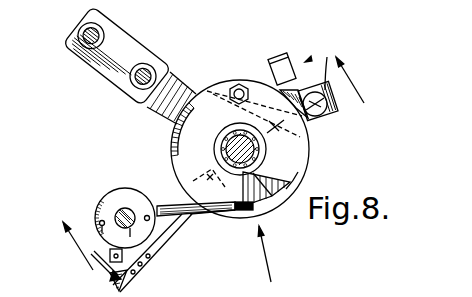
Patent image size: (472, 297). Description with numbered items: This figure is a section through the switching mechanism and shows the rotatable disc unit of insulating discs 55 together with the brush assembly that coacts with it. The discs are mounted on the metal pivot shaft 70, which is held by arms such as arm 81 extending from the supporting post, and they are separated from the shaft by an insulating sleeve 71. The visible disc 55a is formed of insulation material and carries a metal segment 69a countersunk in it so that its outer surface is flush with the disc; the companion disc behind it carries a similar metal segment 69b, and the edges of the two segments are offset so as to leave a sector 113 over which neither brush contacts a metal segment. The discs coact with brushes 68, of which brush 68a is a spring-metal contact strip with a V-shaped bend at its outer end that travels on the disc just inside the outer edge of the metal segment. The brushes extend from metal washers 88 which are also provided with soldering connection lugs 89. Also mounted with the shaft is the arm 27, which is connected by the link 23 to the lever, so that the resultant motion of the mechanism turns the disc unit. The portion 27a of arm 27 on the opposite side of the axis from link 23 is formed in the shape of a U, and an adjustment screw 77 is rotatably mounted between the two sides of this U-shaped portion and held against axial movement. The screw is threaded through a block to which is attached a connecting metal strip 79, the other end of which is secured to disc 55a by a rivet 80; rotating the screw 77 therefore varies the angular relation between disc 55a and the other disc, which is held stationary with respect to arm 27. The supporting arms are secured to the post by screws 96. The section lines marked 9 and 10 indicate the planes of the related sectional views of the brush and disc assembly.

The insulating discs 55 is at (173, 153).
The disc 55a is at (305, 184).
The shaft 70 is at (226, 141).
The insulating sleeve 71 is at (214, 149).
The metal segment 69b is at (241, 139).
The rivet 80 is at (241, 84).
The sector 113 is at (264, 172).
The metal segment 69a is at (272, 196).
The brushes 68 is at (162, 208).
The brush 68a is at (202, 220).
The arm 81 is at (181, 90).
The screws 96 is at (143, 67).
The arm 27 is at (284, 64).
The U-shaped portion 27a is at (318, 68).
The connecting metal strip 79 is at (293, 88).
The adjustment screw 77 is at (321, 113).
The section line of Fig. 9 is at (328, 93).
The section line of Fig. 10 is at (272, 261).
The metal washers 88 is at (118, 194).
The soldering connection lugs 89 is at (126, 277).
The link 23 is at (104, 268).